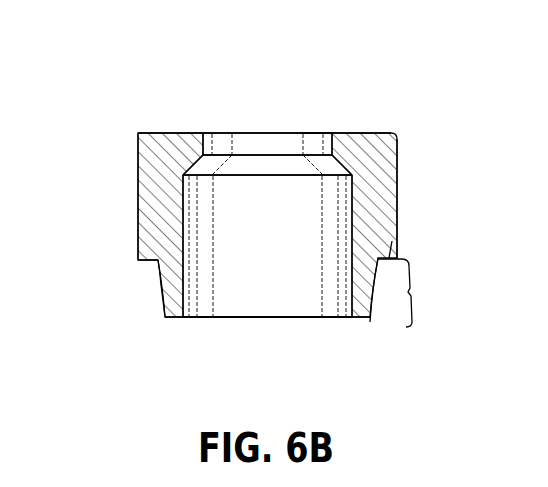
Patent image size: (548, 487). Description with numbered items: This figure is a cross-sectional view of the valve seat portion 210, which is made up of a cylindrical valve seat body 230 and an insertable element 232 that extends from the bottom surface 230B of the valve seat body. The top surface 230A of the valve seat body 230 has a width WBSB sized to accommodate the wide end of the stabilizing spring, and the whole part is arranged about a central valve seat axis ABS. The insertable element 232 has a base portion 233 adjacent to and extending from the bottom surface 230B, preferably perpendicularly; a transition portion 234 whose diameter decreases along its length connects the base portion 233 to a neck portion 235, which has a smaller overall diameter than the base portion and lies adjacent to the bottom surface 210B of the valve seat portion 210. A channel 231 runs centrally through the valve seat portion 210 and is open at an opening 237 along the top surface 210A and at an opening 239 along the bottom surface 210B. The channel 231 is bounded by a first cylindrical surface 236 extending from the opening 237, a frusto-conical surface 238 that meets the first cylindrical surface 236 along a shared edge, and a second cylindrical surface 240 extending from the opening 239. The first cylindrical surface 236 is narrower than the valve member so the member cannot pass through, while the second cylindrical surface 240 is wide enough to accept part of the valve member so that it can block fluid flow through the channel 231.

The valve seat portion 210 is at (405, 143).
The top surface of the valve seat portion 210A is at (343, 127).
The bottom surface of the valve seat portion 210B is at (165, 324).
The valve seat body 230 is at (138, 165).
The top surface of the valve seat body 230A is at (168, 133).
The bottom surface of the valve seat body 230B is at (393, 237).
The channel 231 is at (268, 184).
The insertable element 232 is at (414, 290).
The base portion 233 is at (149, 266).
The transition portion 234 is at (150, 285).
The neck portion 235 is at (157, 305).
The first cylindrical surface 236 is at (252, 150).
The opening 237 is at (276, 126).
The frusto-conical surface 238 is at (222, 153).
The opening 239 is at (206, 324).
The second cylindrical surface 240 is at (237, 233).
The central valve seat axis ABS is at (266, 363).
The width of the top surface of the valve seat body WBSB is at (138, 132).